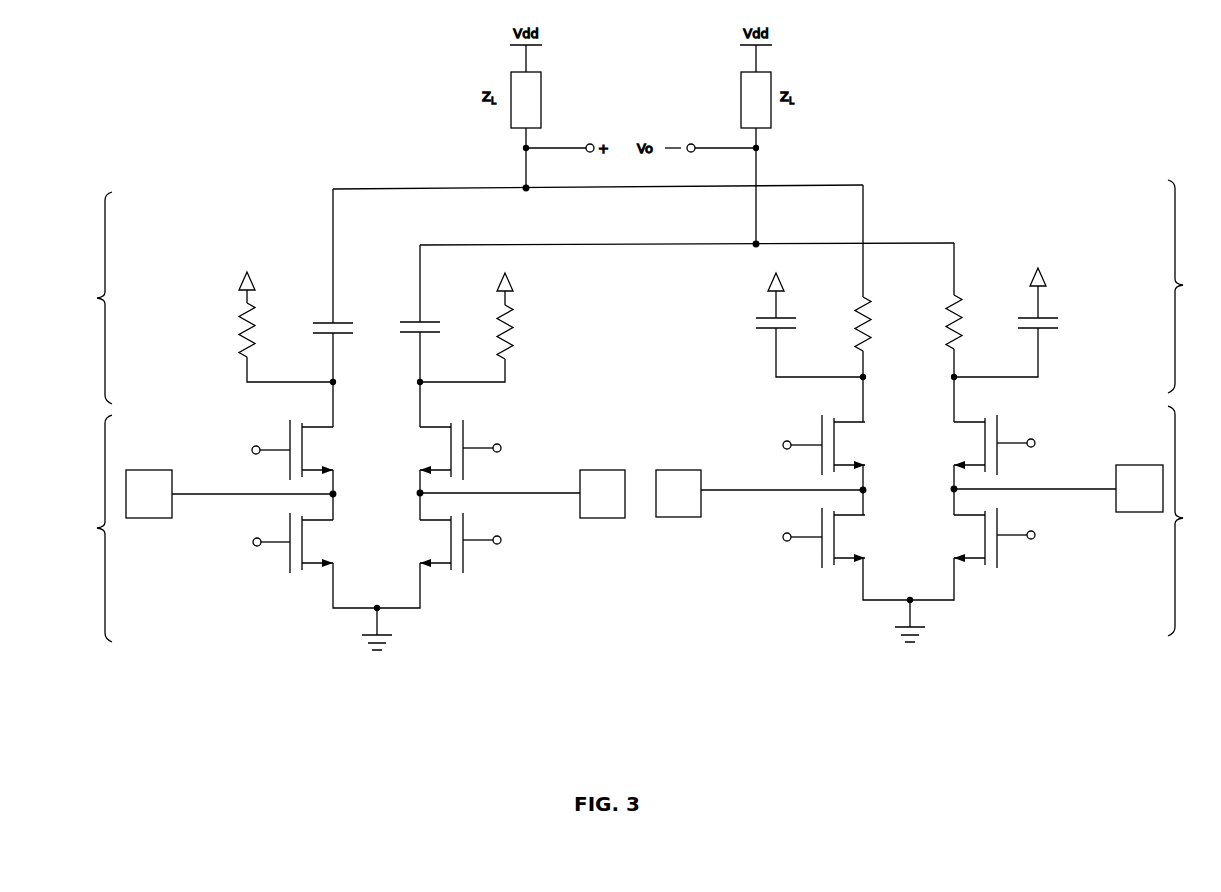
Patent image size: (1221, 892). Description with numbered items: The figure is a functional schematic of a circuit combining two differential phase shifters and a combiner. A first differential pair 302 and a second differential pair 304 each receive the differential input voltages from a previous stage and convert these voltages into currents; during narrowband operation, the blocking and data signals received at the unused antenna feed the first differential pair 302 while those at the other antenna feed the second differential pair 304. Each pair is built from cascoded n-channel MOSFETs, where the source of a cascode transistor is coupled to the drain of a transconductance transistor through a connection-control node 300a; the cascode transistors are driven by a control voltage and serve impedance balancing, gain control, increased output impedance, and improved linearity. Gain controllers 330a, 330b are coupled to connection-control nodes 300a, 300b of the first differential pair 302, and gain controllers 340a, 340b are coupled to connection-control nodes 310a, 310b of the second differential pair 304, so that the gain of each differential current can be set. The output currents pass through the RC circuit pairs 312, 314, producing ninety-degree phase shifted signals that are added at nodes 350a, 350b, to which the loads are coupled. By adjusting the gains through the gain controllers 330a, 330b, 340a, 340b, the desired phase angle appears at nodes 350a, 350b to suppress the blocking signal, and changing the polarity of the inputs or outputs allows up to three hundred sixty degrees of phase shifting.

The first differential pair 302 is at (987, 524).
The second differential pair 304 is at (294, 532).
The RC circuit pair 312 is at (974, 301).
The RC circuit pair 314 is at (302, 308).
The connection-control node 300a is at (866, 488).
The connection-control node 300b is at (951, 491).
The connection-control node 310a is at (336, 493).
The connection-control node 310b is at (418, 496).
The gain controller 330a is at (678, 470).
The gain controller 330b is at (1137, 465).
The gain controller 340a is at (147, 470).
The gain controller 340b is at (600, 470).
The node 350a is at (526, 186).
The node 350b is at (756, 242).